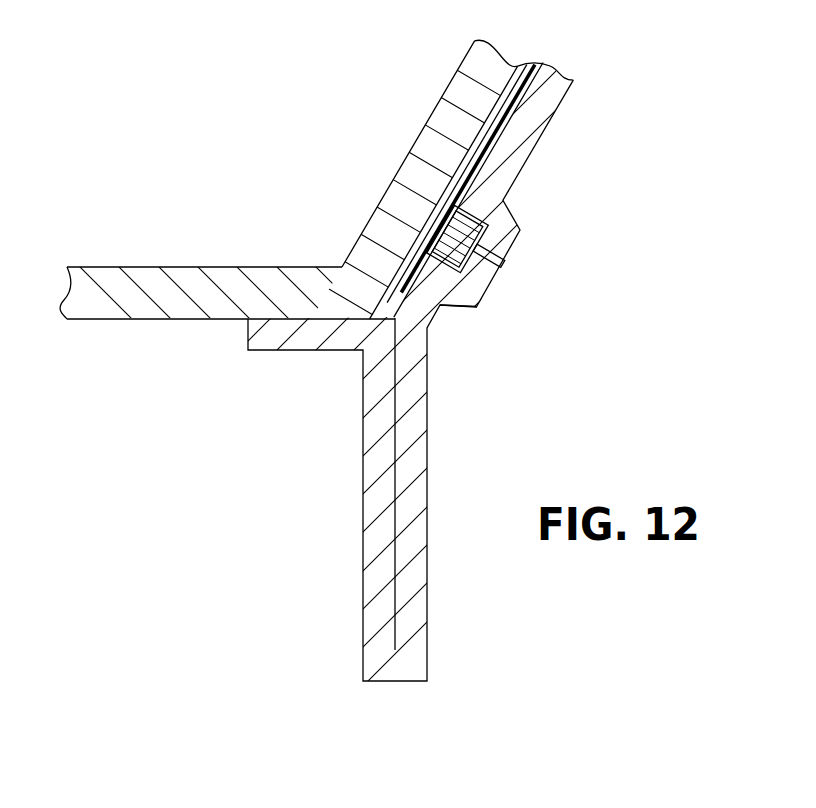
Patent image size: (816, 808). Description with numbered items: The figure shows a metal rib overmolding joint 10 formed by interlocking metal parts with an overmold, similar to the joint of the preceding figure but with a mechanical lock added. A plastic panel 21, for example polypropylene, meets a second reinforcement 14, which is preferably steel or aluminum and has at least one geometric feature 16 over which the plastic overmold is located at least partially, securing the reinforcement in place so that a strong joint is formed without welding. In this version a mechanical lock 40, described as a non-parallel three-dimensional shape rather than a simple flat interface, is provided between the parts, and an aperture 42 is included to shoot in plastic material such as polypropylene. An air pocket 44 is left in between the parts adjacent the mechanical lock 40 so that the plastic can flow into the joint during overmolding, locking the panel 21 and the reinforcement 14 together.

The metal rib overmolding joint 10 is at (655, 352).
The second reinforcement 14 is at (510, 102).
The geometric feature 16 is at (412, 392).
The panel 21 is at (413, 157).
The mechanical lock 40 is at (497, 245).
The aperture 42 is at (500, 270).
The air pocket 44 is at (480, 200).